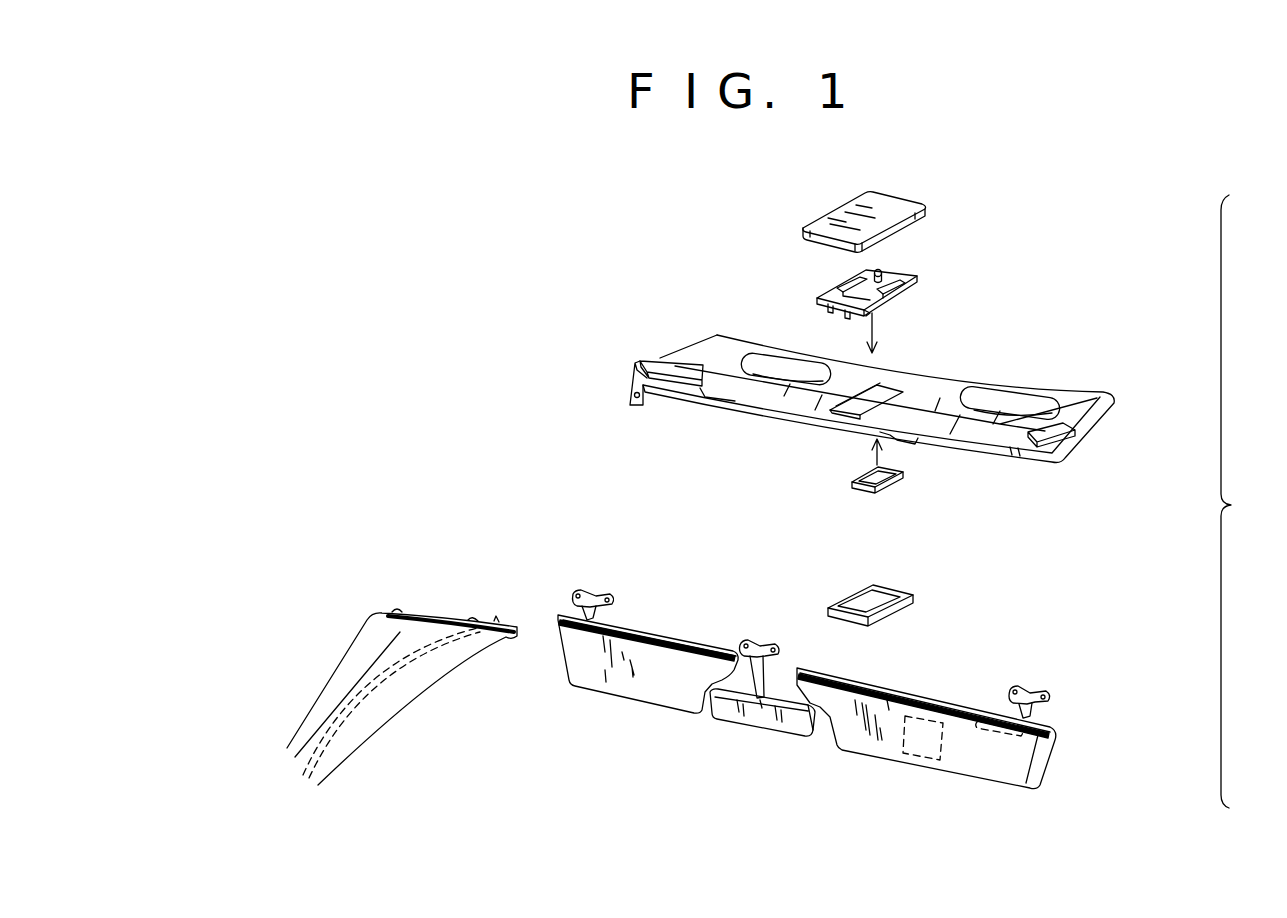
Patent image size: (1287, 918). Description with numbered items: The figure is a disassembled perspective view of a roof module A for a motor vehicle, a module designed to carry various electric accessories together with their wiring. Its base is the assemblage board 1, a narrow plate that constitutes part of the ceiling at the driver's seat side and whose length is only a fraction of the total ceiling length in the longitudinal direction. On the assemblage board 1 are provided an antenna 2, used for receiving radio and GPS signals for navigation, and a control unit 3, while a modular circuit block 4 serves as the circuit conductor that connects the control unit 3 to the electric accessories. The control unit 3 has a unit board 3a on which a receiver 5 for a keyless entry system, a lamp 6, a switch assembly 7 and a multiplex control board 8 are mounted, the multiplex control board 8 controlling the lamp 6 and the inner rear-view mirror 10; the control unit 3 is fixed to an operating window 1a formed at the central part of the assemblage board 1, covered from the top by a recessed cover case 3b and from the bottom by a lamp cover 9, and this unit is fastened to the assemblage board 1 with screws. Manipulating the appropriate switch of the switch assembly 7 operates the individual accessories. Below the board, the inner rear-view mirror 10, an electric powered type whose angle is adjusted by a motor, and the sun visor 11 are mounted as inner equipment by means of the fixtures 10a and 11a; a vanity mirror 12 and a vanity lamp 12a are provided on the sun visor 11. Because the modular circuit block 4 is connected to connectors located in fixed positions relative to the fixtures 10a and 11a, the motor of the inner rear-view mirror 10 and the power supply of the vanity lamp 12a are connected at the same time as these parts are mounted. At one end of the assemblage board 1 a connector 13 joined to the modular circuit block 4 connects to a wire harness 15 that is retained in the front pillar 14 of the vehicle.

The assemblage board 1 is at (1092, 389).
The operating window 1a is at (887, 390).
The antenna 2 is at (760, 360).
The control unit 3 is at (917, 277).
The unit board 3a is at (870, 303).
The recessed cover case 3b is at (837, 211).
The modular circuit block 4 is at (705, 398).
The receiver 5 is at (884, 270).
The lamp 6 is at (846, 316).
The switch assembly 7 is at (873, 492).
The multiplex control board 8 is at (840, 283).
The lamp cover 9 is at (895, 615).
The inner rear-view mirror 10 is at (733, 737).
The fixture 10a is at (778, 656).
The sun visor 11 is at (607, 693).
The fixture 11a is at (576, 595).
The vanity mirror 12 is at (905, 752).
The vanity lamp 12a is at (1020, 737).
The connector 13 is at (627, 380).
The front pillar 14 is at (337, 672).
The wire harness 15 is at (390, 682).
The roof module A is at (1243, 501).